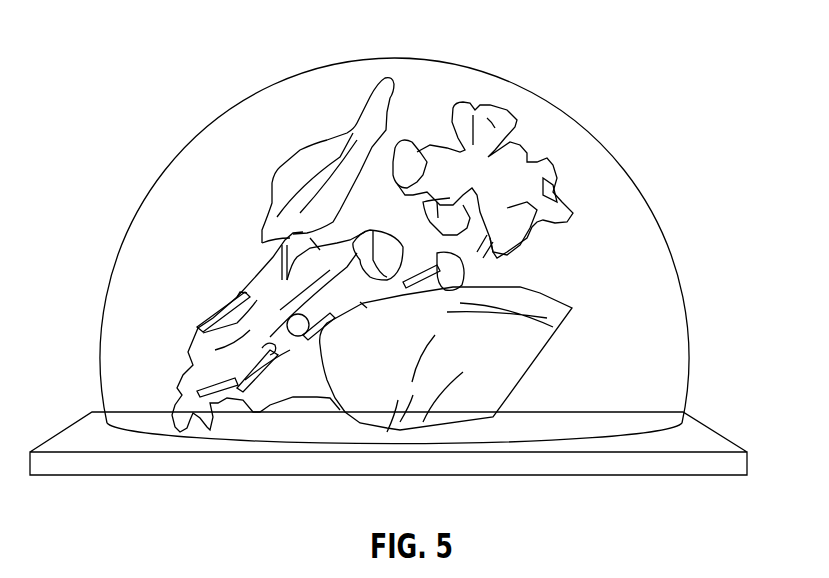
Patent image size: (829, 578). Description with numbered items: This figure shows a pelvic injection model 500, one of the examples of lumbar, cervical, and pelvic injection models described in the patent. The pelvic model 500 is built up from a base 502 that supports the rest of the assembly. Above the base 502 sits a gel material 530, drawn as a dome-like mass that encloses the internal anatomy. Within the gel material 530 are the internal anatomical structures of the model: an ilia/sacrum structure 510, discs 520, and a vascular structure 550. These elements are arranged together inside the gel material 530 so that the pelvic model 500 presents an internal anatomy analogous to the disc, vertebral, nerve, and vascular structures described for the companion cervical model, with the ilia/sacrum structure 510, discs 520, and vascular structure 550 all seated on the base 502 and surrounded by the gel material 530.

The pelvic model 500 is at (615, 53).
The base 502 is at (122, 467).
The ilia/sacrum structure 510 is at (490, 180).
The discs 520 is at (517, 245).
The gel material 530 is at (207, 198).
The vascular structure 550 is at (180, 322).